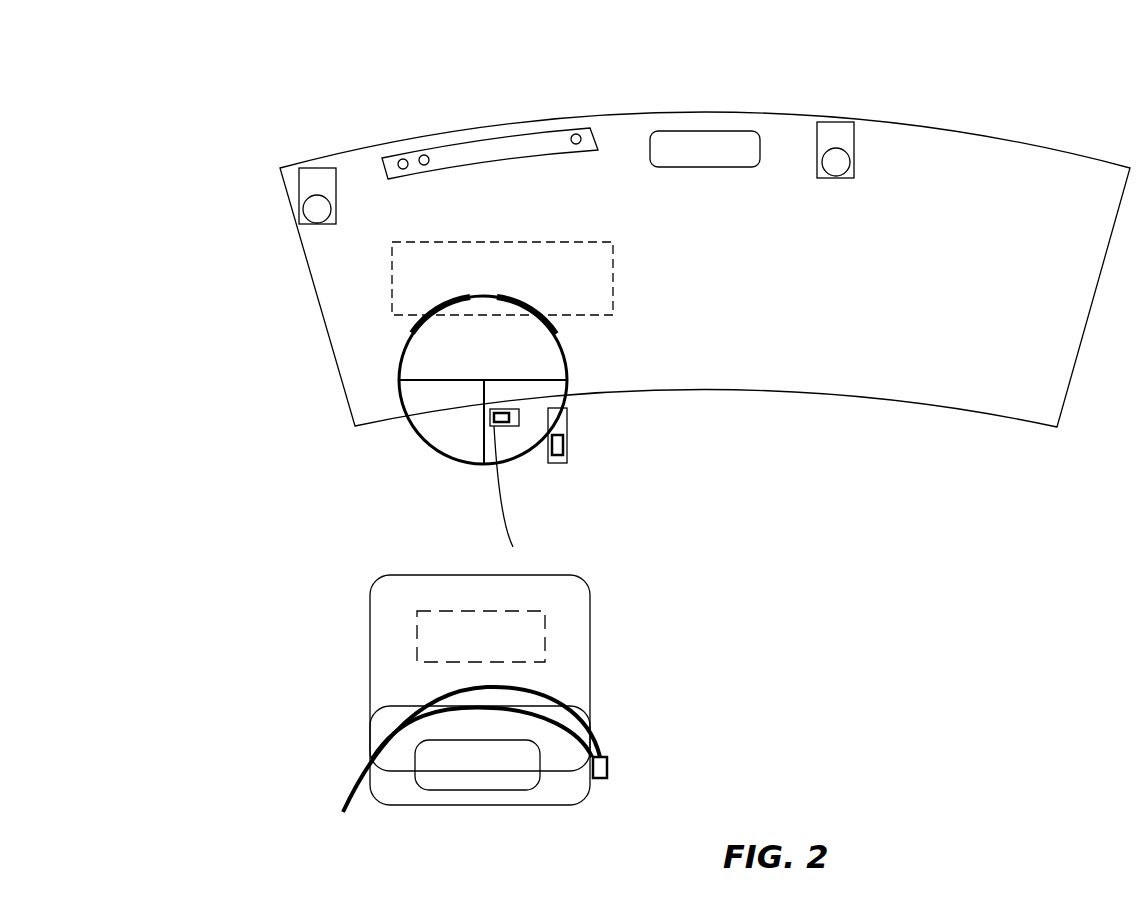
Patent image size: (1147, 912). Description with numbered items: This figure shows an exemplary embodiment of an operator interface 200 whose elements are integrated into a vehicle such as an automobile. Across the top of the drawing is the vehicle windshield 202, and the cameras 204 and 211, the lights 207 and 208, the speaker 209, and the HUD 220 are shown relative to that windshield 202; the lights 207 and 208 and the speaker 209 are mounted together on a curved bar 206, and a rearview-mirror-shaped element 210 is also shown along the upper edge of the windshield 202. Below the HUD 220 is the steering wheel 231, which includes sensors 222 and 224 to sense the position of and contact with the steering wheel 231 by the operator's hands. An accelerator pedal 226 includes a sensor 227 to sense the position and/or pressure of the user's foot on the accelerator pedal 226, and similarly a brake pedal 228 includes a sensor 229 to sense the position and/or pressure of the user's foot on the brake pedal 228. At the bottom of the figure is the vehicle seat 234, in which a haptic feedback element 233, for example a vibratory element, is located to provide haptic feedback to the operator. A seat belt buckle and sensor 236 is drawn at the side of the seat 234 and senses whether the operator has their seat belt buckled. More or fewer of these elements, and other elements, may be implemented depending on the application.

The vehicle interior system 200 is at (126, 41).
The vehicle windshield 202 is at (308, 270).
The camera 204 is at (317, 168).
The sensor array 206 is at (463, 164).
The light 207 is at (424, 155).
The light 208 is at (402, 158).
The speaker 209 is at (576, 133).
The rearview mirror display 210 is at (677, 131).
The camera 211 is at (835, 122).
The HUD 220 is at (572, 242).
The sensor 222 is at (414, 336).
The sensor 224 is at (549, 336).
The accelerator pedal 226 is at (557, 464).
The sensor 227 is at (567, 440).
The brake pedal 228 is at (506, 426).
The sensor 229 is at (513, 547).
The steering wheel 231 is at (438, 460).
The haptic feedback element 233 is at (545, 632).
The vehicle seat 234 is at (370, 613).
The seat belt buckle and sensor 236 is at (608, 773).